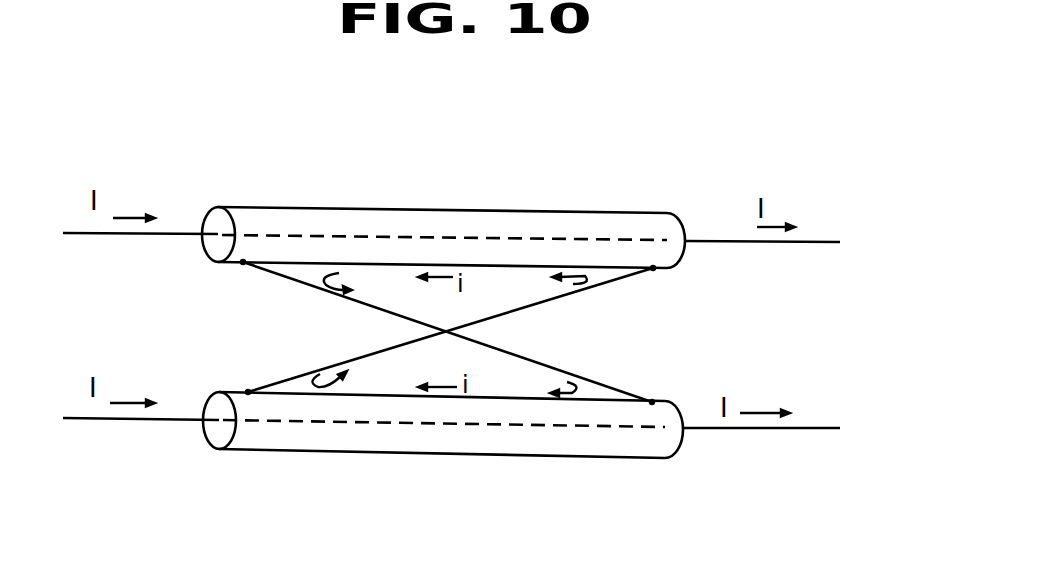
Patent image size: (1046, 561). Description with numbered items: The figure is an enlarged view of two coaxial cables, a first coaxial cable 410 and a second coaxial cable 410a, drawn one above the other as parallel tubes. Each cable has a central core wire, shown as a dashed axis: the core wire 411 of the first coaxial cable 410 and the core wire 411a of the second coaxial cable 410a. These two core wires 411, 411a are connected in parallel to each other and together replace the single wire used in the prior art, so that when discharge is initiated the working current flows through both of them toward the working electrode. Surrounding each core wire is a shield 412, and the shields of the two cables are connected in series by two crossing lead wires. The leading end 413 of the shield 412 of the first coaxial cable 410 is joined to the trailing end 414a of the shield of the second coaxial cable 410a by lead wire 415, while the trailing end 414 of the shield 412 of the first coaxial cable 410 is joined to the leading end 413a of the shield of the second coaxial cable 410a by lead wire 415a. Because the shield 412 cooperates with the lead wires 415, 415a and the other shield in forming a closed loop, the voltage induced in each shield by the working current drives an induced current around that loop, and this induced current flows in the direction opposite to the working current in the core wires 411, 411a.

The first coaxial cable 410 is at (455, 456).
The second coaxial cable 410a is at (440, 208).
The core wire 411 is at (585, 428).
The core wire 411a is at (577, 238).
The shield 412 is at (287, 206).
The leading end 413 is at (652, 402).
The leading end 413a is at (653, 268).
The trailing end 414 is at (248, 392).
The trailing end 414a is at (243, 262).
The lead wire 415 is at (548, 366).
The lead wire 415a is at (551, 303).